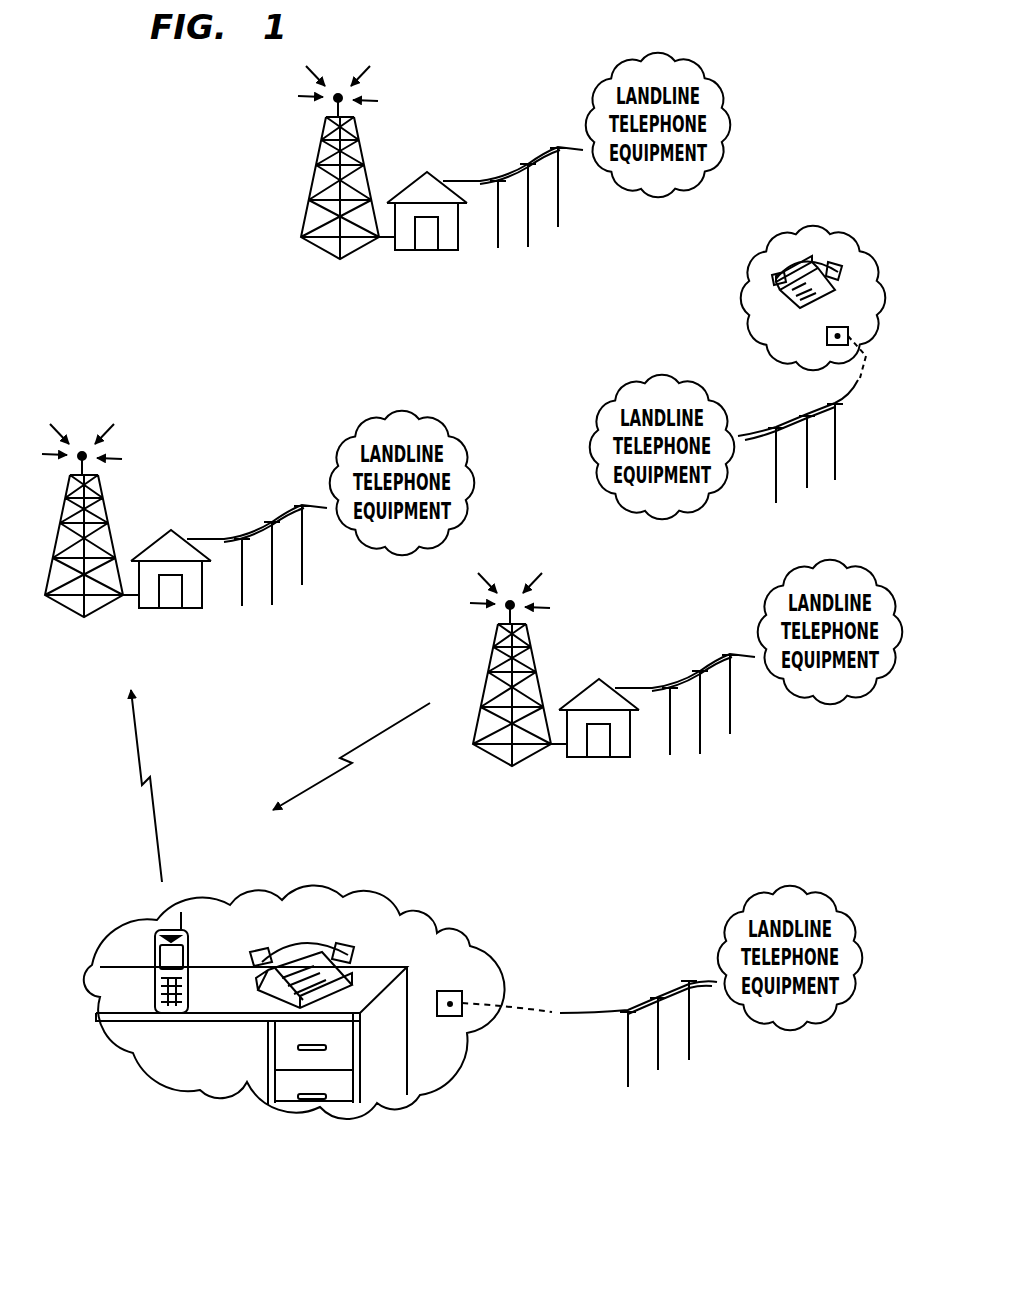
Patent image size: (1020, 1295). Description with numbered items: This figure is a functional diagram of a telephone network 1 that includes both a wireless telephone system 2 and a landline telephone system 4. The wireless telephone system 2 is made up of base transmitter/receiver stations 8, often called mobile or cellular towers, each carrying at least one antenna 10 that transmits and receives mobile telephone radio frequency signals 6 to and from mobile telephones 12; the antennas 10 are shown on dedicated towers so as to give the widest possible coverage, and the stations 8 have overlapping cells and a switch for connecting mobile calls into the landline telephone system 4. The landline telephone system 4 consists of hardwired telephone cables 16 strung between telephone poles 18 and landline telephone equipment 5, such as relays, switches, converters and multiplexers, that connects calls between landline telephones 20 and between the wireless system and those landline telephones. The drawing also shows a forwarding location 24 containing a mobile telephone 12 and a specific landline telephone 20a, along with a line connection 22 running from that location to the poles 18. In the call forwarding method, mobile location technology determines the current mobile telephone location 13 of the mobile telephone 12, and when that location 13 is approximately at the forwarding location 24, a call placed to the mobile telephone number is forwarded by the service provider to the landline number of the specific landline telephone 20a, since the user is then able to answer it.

The telephone network 1 is at (700, 1102).
The wireless telephone system 2 is at (101, 660).
The landline telephone system 4 is at (774, 758).
The landline telephone equipment 5 is at (658, 52).
The mobile telephone radio frequency signals 6 is at (342, 90).
The base transmitter/receiver station 8 is at (294, 153).
The antenna 10 is at (350, 116).
The mobile telephone 12 is at (190, 955).
The current mobile telephone location 13 is at (125, 1004).
The telephone cables 16 is at (467, 177).
The telephone poles 18 is at (528, 247).
The landline telephone 20 is at (779, 306).
The specific landline telephone 20a is at (350, 960).
The telephone line connection 22 is at (654, 678).
The forwarding location 24 is at (330, 882).